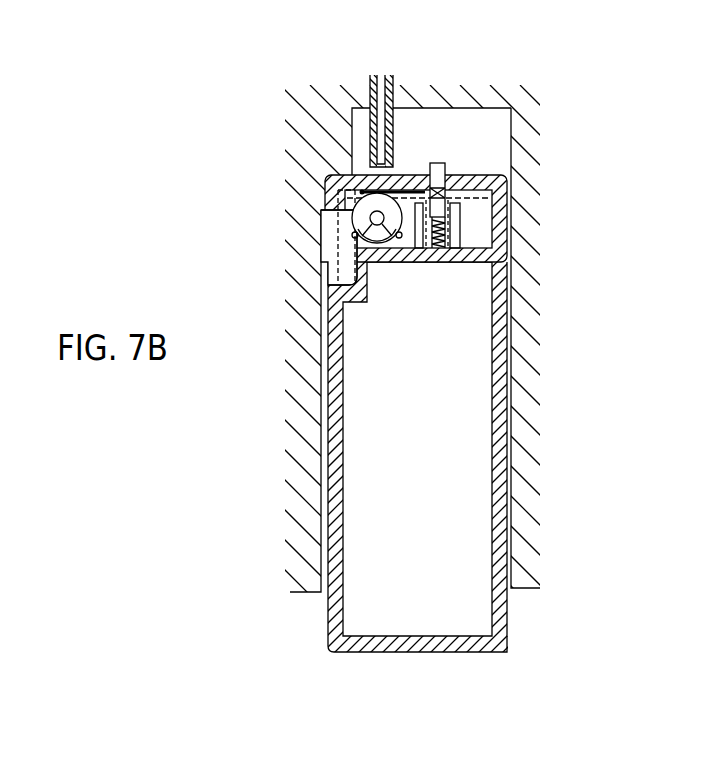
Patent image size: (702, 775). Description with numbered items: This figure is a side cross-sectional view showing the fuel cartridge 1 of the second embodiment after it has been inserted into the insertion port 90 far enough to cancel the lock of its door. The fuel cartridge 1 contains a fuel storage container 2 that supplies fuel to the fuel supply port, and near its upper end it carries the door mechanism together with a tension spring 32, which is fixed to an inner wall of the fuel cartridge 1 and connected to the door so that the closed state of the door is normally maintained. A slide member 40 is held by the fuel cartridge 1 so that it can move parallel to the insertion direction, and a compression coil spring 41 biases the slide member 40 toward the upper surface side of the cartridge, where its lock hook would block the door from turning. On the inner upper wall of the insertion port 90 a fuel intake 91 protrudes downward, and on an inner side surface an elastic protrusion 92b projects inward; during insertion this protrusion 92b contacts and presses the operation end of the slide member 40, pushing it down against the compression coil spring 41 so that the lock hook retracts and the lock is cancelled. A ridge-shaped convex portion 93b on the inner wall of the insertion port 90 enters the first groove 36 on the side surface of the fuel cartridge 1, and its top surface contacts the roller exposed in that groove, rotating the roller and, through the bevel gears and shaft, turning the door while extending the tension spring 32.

The fuel cartridge 1 is at (509, 656).
The fuel storage container 2 is at (428, 618).
The tension spring 32 is at (397, 247).
The first groove 36 is at (325, 275).
The slide member 40 is at (508, 199).
The compression coil spring 41 is at (448, 247).
The insertion port 90 is at (319, 600).
The fuel intake 91 is at (394, 132).
The protrusion 92b is at (441, 166).
The ridge-shaped convex portion 93b is at (348, 146).